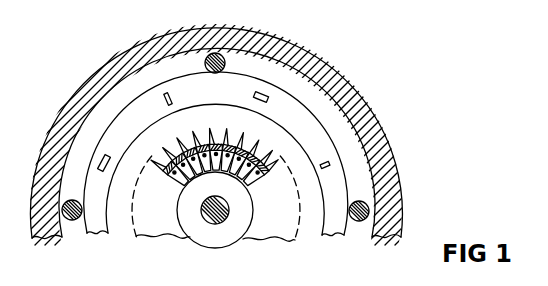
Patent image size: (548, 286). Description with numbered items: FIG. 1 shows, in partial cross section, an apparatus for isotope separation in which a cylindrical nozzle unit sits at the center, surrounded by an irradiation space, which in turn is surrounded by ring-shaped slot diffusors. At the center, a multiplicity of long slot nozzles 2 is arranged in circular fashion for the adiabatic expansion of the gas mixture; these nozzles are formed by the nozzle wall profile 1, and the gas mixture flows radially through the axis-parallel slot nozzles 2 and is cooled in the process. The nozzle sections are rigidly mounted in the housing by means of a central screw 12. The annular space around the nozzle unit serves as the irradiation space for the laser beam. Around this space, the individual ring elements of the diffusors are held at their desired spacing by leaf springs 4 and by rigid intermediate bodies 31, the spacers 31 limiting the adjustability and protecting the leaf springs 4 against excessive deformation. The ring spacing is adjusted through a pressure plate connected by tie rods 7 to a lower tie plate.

The nozzle wall profile 1 is at (264, 148).
The slot nozzles 2 is at (174, 152).
The leaf springs 4 is at (271, 95).
The tie rods 7 is at (71, 220).
The central screw 12 is at (207, 224).
The rigid intermediate bodies 31 is at (163, 96).